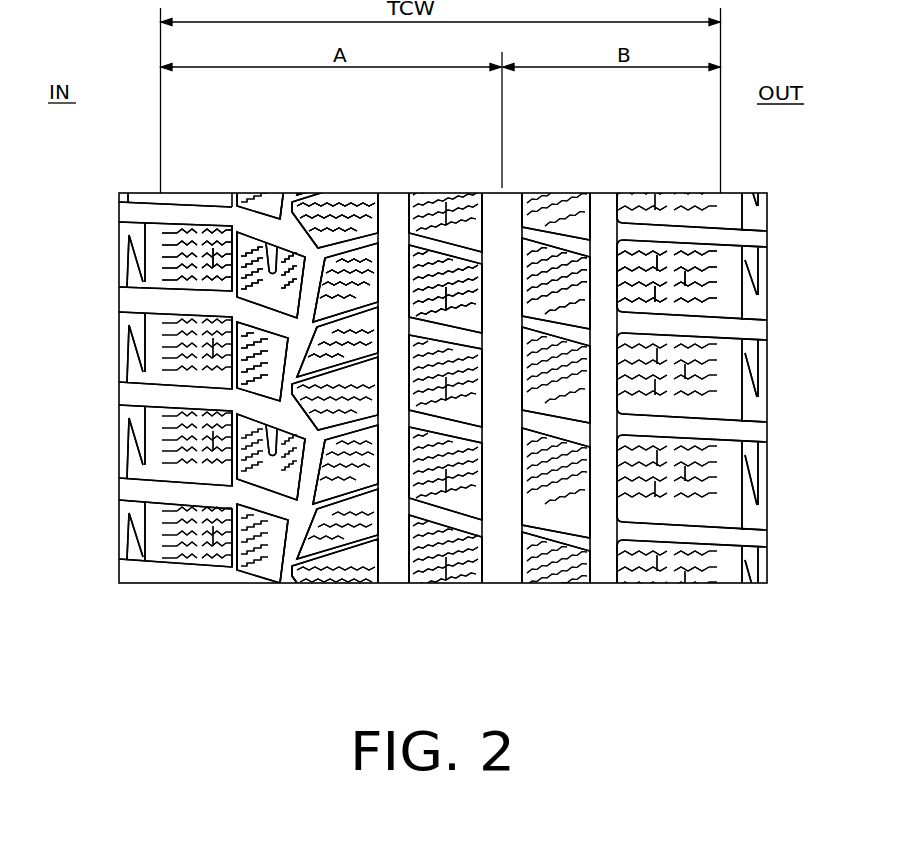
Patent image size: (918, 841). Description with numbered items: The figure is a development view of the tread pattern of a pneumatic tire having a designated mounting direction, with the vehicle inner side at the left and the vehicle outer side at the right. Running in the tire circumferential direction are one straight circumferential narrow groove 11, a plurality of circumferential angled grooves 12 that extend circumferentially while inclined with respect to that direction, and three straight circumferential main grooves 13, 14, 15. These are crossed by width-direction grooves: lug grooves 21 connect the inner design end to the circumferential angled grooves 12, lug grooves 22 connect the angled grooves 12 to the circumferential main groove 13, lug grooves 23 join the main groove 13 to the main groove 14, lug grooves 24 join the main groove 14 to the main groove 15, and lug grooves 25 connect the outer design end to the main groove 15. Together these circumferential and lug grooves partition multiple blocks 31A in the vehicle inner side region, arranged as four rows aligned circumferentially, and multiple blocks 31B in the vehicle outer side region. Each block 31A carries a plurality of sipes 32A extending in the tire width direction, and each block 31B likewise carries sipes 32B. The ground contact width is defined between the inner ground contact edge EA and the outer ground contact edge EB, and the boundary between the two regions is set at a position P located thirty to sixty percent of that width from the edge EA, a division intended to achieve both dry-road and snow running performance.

The circumferential narrow groove 11 is at (235, 196).
The circumferential angled grooves 12 is at (290, 200).
The circumferential main groove 13 is at (396, 195).
The circumferential main groove 14 is at (495, 200).
The circumferential main groove 15 is at (608, 196).
The lug grooves 21 is at (203, 200).
The lug grooves 22 is at (362, 237).
The lug grooves 23 is at (437, 242).
The lug grooves 24 is at (558, 236).
The lug grooves 25 is at (688, 232).
The blocks 31A is at (157, 548).
The sipes 32A is at (245, 563).
The blocks 31B is at (575, 570).
The sipes 32B is at (538, 570).
The ground contact edge EA is at (160, 142).
The ground contact edge EB is at (722, 146).
The position P is at (503, 128).